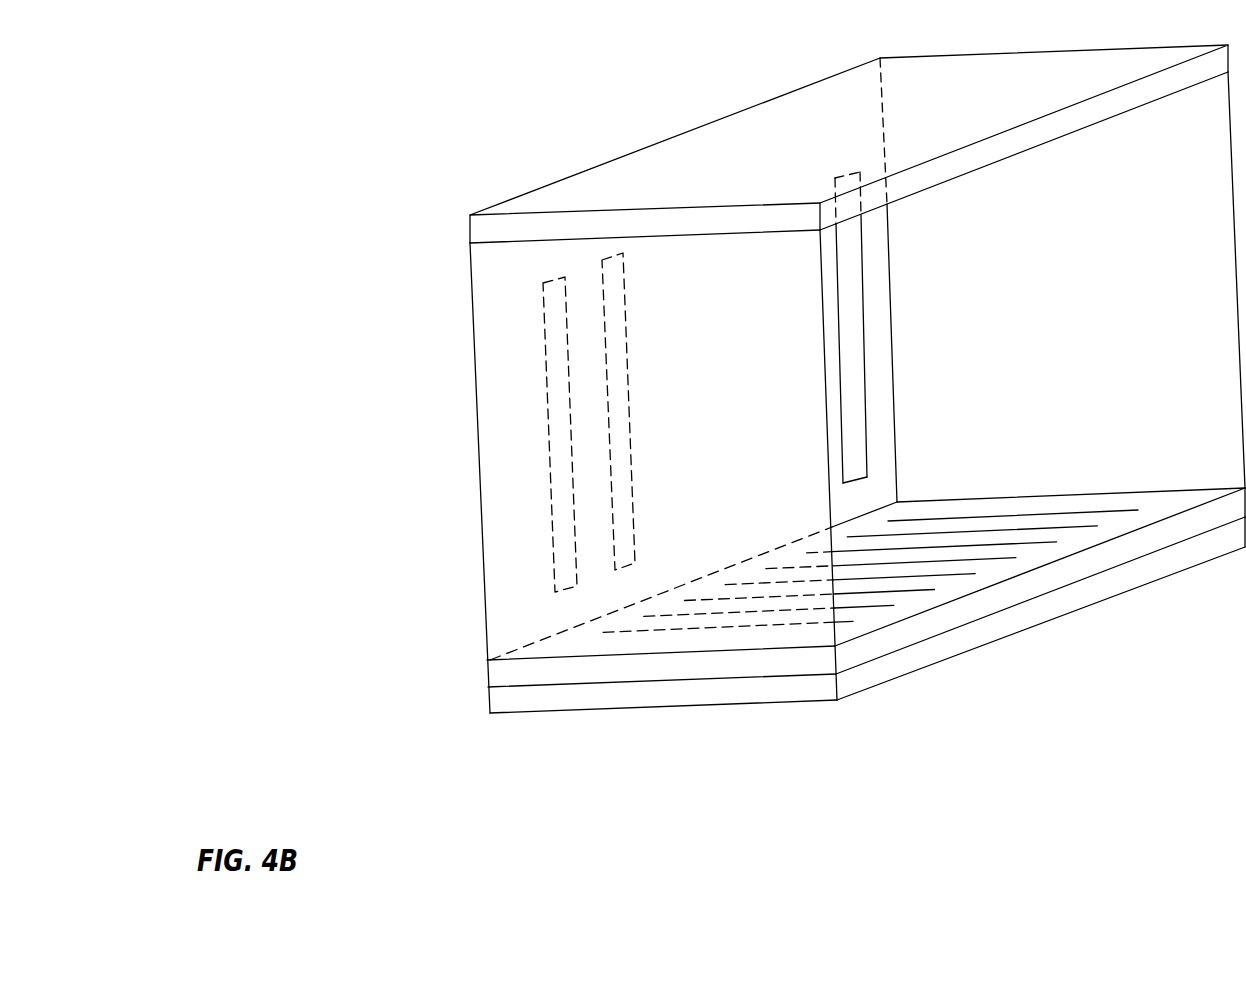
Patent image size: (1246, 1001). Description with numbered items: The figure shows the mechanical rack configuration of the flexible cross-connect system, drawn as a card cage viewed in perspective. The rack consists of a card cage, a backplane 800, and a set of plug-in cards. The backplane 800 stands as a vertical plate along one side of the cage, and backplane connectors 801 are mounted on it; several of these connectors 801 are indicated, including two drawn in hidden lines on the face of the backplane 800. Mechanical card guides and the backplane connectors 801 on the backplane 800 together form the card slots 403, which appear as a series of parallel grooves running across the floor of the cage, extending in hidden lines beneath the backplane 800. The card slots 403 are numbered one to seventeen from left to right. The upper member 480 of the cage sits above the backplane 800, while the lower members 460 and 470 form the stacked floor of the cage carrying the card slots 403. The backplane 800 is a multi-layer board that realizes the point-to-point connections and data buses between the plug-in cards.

The upper shelf 480 is at (494, 231).
The backplane 800 is at (493, 548).
The backplane connectors 801 is at (856, 175).
The lower shelf 460 is at (510, 667).
The bottom shelf 470 is at (510, 703).
The card slots 403 is at (972, 574).